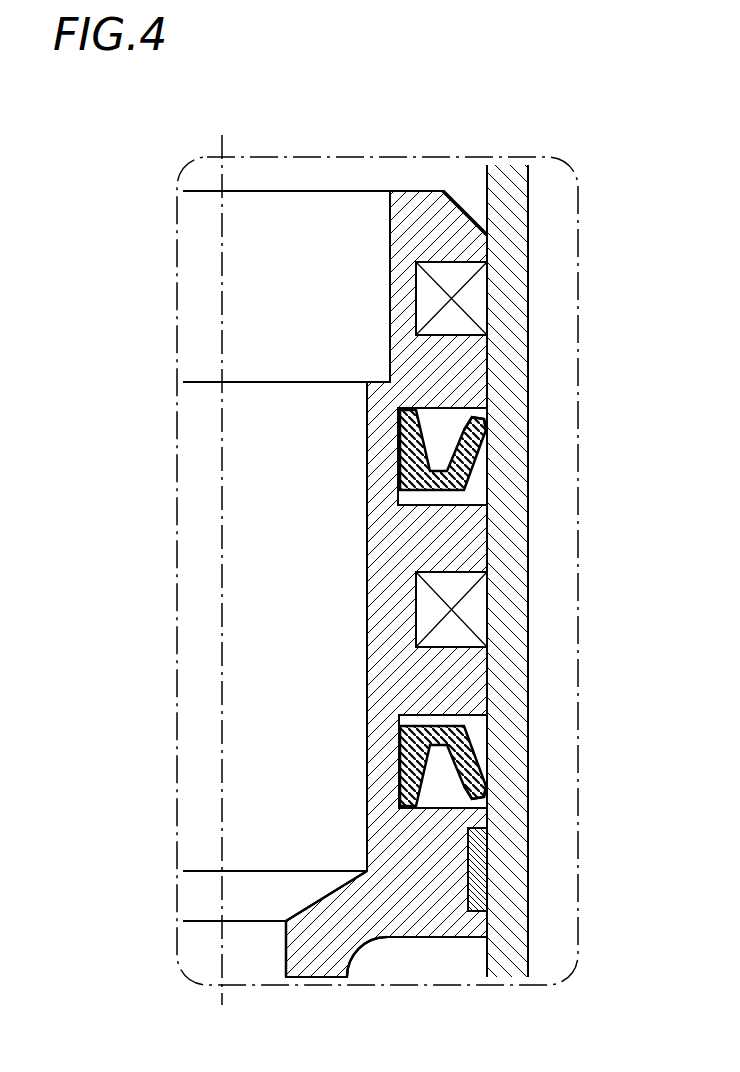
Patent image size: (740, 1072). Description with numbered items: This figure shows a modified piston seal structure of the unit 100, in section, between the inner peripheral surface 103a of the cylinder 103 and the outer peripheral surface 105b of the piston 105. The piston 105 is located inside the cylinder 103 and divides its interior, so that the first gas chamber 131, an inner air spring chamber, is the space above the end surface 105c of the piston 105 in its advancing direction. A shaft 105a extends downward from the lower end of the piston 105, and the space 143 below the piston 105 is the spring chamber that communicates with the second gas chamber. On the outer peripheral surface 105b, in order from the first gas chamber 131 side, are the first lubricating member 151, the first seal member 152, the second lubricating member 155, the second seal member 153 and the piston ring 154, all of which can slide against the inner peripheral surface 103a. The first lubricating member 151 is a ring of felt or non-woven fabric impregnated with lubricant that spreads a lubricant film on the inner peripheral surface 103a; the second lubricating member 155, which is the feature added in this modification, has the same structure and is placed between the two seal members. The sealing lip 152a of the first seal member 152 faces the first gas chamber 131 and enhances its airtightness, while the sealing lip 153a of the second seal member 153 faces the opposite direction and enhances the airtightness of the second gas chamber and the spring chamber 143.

The motor unit 100 is at (118, 166).
The gas chamber 131 is at (264, 176).
The piston 105 is at (312, 220).
The shaft 105a is at (317, 956).
The outer peripheral surface 105b is at (487, 247).
The end surface 105c is at (408, 190).
The cylinder 103 is at (531, 208).
The inner peripheral surface 103a is at (487, 190).
The space 143 is at (422, 964).
The lubricating member 151 is at (475, 298).
The first seal member 152 is at (479, 470).
The sealing lip 152a is at (488, 427).
The second lubricating member 155 is at (475, 603).
The second seal member 153 is at (478, 735).
The sealing lip 153a is at (487, 785).
The piston ring 154 is at (480, 870).